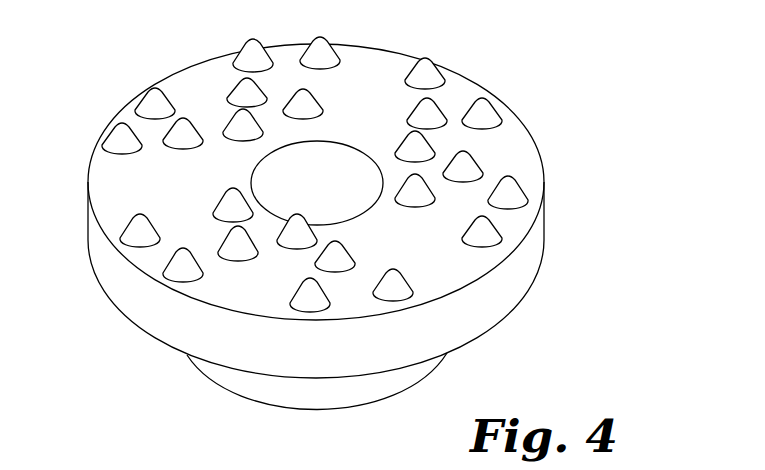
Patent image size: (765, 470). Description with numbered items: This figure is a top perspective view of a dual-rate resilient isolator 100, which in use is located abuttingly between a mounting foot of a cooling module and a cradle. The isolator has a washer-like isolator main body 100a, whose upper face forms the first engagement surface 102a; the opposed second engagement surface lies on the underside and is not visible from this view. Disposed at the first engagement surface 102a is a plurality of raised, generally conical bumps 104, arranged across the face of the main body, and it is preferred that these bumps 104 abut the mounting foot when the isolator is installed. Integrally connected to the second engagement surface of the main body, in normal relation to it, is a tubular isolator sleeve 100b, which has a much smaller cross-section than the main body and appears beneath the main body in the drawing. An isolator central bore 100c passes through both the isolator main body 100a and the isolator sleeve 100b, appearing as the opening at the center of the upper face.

The dual-rate resilient isolator 100 is at (369, 224).
The isolator main body 100a is at (532, 258).
The isolator sleeve 100b is at (243, 385).
The isolator central bore 100c is at (338, 158).
The first engagement surface 102a is at (442, 262).
The conical bumps 104 is at (333, 46).